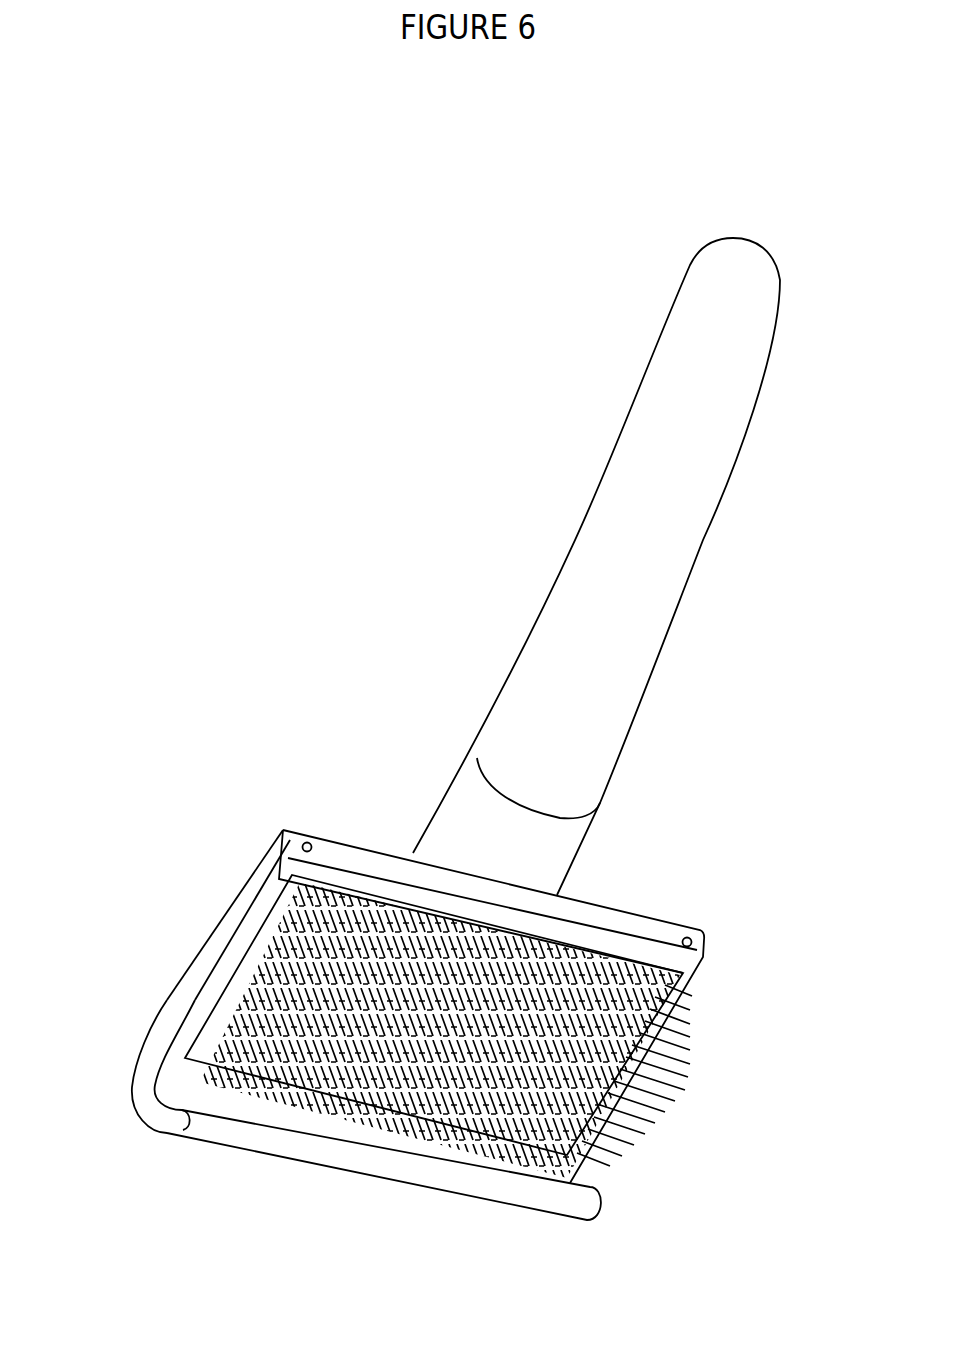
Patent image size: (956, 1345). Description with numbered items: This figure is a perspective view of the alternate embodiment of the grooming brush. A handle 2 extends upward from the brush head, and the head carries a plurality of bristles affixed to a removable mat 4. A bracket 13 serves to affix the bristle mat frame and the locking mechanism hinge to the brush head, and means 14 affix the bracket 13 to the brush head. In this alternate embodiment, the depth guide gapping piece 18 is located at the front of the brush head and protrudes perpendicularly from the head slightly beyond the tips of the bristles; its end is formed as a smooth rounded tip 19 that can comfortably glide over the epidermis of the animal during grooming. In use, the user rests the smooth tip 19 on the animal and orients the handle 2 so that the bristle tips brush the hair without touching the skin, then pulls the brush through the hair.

The handle 2 is at (562, 457).
The bracket 13 is at (375, 858).
The removable mat 4 is at (256, 987).
The means for affixing the bracket to the brush head 14 is at (689, 940).
The depth guide gapping piece 18 is at (132, 1107).
The smooth rounded tip 19 is at (598, 1212).